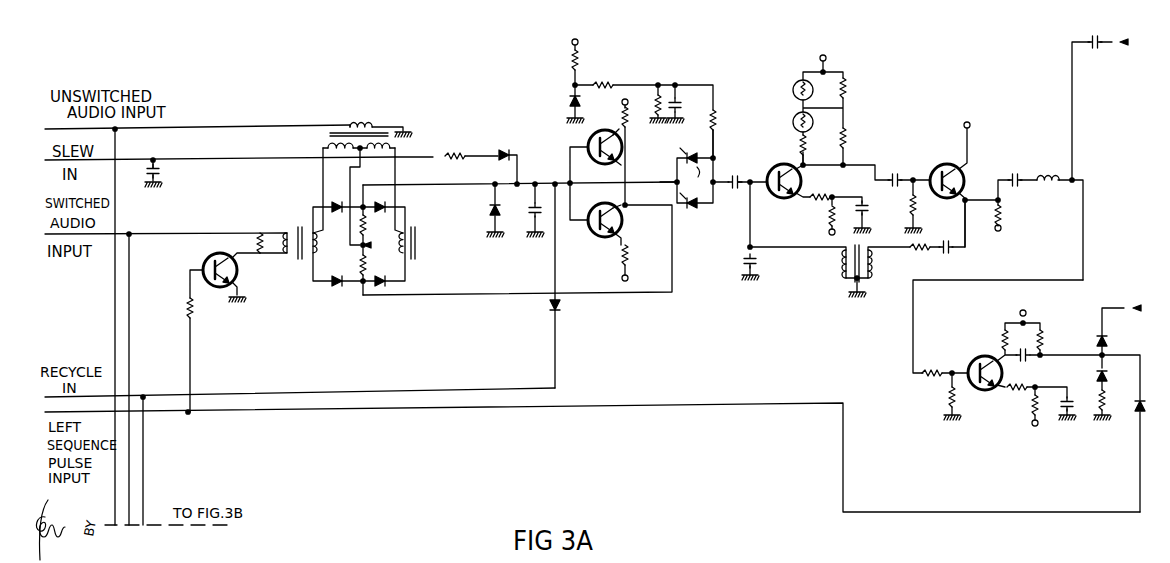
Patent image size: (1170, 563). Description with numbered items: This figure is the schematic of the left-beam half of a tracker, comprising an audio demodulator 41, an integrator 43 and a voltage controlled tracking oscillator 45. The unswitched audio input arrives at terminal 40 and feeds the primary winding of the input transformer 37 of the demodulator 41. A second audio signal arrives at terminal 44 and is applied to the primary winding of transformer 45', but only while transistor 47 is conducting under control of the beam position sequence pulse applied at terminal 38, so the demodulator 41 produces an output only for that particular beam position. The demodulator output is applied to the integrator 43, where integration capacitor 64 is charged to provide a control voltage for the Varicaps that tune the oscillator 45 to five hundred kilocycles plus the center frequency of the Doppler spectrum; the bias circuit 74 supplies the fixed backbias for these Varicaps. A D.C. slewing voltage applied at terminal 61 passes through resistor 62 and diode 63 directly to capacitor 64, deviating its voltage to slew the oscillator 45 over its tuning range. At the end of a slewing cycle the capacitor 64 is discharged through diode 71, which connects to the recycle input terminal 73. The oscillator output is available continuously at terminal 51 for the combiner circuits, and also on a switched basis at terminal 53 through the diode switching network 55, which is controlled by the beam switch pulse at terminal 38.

The input transformer 37 is at (323, 142).
The terminal 38 is at (44, 419).
The terminal 40 is at (42, 129).
The audio demodulator 41 is at (364, 240).
The integrator 43 is at (520, 229).
The terminal 44 is at (42, 233).
The tracking oscillator 45 is at (857, 168).
The input transformer 45' is at (287, 228).
The transistor / Varicaps 47 is at (207, 257).
The terminal 51 is at (1112, 50).
The terminal 53 is at (1100, 312).
The diode switching network 55 is at (1119, 433).
The terminal 61 is at (43, 160).
The resistor 62 is at (457, 161).
The diode 63 is at (506, 152).
The integration capacitor 64 is at (515, 210).
The diode 71 is at (542, 308).
The recycle input terminal 73 is at (44, 397).
The bias circuit 74 is at (639, 157).